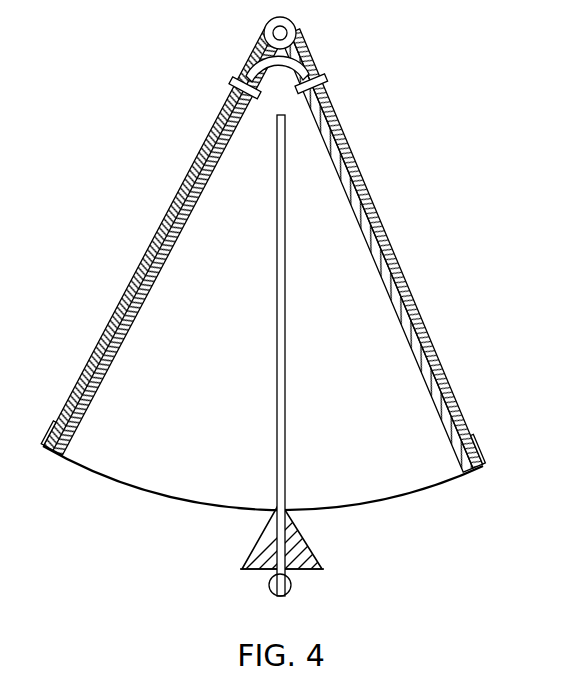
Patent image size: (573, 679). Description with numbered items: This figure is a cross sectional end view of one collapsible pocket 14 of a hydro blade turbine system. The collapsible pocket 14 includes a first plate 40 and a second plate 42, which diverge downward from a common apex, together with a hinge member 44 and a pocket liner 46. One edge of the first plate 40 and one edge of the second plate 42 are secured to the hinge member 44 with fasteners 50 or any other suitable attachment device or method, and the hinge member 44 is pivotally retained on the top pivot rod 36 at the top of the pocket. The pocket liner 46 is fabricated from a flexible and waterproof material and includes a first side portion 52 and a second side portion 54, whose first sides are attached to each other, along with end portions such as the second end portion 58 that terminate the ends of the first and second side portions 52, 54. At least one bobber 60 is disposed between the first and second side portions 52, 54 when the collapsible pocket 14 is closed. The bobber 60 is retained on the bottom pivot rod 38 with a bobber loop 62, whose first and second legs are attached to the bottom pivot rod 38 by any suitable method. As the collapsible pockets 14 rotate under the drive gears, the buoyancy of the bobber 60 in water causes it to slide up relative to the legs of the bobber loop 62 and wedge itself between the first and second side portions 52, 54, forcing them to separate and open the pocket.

The collapsible pocket 14 is at (443, 290).
The top pivot rod 36 is at (273, 32).
The bottom pivot rod 38 is at (292, 587).
The first plate 40 is at (152, 241).
The second plate 42 is at (377, 212).
The hinge member 44 is at (318, 62).
The pocket liner 46 is at (137, 494).
The fasteners 50 is at (230, 85).
The first side portion 52 is at (74, 427).
The second side portion 54 is at (443, 422).
The second end portion 58 is at (333, 422).
The bobber 60 is at (322, 559).
The bobber loop 62 is at (230, 572).